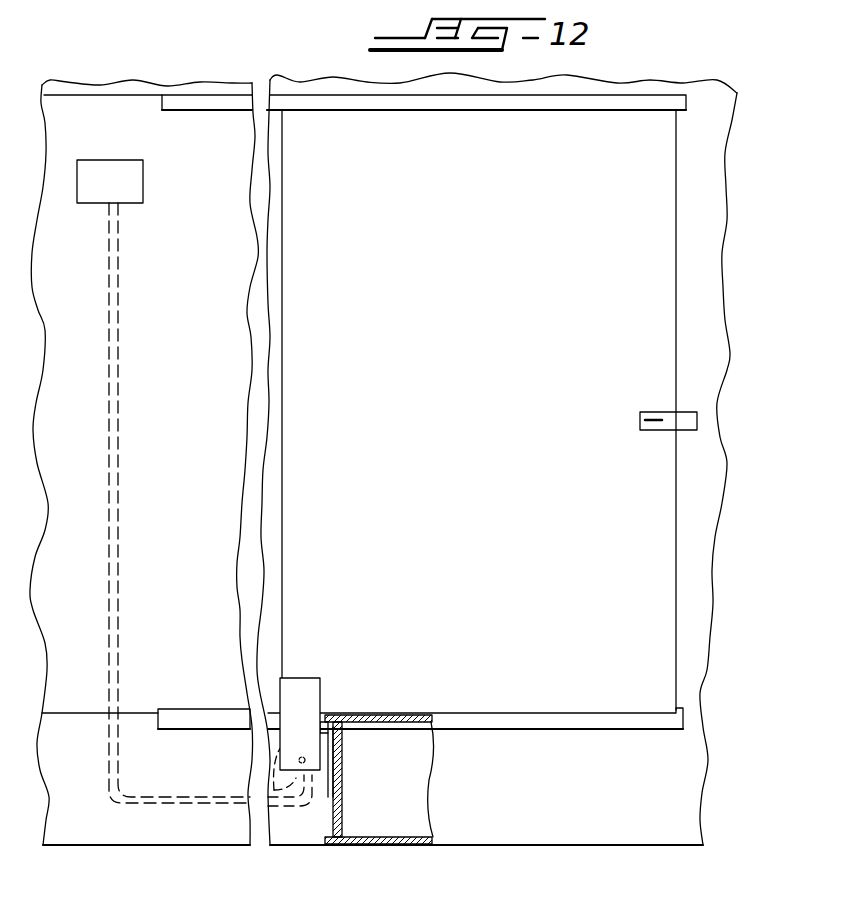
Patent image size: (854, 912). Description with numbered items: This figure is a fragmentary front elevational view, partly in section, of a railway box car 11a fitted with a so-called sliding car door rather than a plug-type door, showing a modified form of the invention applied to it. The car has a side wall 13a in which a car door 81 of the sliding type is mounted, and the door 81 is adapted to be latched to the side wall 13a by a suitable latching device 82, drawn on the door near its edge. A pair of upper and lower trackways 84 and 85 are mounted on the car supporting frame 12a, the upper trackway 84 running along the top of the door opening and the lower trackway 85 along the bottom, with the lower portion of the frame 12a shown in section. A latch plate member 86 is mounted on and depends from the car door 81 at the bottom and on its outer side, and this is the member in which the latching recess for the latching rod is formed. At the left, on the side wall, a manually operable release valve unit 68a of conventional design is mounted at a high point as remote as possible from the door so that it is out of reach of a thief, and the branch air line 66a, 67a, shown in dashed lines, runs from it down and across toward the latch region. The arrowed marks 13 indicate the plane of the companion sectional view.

The railway box car 11a is at (710, 330).
The car supporting frame 12a is at (403, 825).
The section line 13 is at (302, 672).
The side wall 13a is at (708, 532).
The branch air line 66a is at (200, 790).
The branch air line 67a is at (113, 378).
The manually operable release valve unit 68a is at (130, 180).
The car door 81 is at (647, 392).
The latching device 82 is at (648, 426).
The upper trackway 84 is at (608, 107).
The lower trackway 85 is at (630, 700).
The latch plate member 86 is at (310, 700).